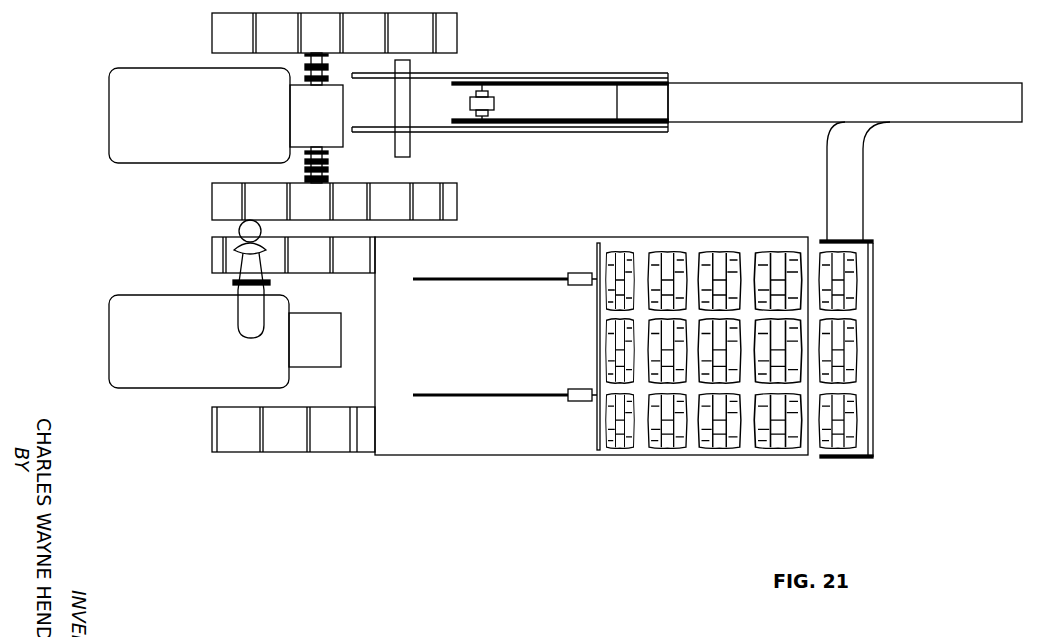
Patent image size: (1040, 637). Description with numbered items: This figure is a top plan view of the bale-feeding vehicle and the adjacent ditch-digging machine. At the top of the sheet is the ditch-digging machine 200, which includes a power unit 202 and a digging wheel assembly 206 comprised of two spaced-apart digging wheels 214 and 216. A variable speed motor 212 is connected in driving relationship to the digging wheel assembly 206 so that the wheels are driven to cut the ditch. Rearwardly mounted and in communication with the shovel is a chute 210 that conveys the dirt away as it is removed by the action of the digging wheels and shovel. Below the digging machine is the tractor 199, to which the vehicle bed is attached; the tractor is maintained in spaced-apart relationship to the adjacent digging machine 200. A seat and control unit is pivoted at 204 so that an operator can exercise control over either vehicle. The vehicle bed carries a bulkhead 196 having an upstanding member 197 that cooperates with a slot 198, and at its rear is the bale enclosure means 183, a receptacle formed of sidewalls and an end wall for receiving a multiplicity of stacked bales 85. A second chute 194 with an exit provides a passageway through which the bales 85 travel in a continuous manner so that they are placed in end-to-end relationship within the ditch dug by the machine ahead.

The power unit 202 is at (165, 47).
The ditch-digging machine 200 is at (510, 90).
The digging wheel assembly 206 is at (541, 72).
The digging wheel 214 is at (470, 72).
The digging wheel 216 is at (502, 134).
The variable speed motor 212 is at (497, 103).
The chute 210 is at (721, 82).
The chute 194 is at (867, 203).
The pivot 204 is at (236, 313).
The tractor 199 is at (272, 467).
The bulkhead 196 is at (596, 326).
The upstanding member 197 is at (580, 272).
The slot 198 is at (440, 284).
The bales 85 is at (777, 455).
The bale enclosure means 183 is at (880, 451).